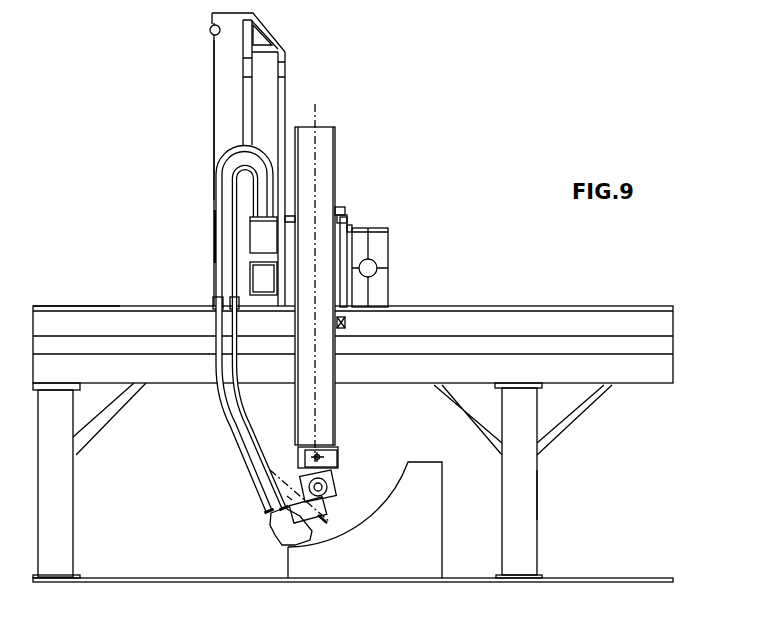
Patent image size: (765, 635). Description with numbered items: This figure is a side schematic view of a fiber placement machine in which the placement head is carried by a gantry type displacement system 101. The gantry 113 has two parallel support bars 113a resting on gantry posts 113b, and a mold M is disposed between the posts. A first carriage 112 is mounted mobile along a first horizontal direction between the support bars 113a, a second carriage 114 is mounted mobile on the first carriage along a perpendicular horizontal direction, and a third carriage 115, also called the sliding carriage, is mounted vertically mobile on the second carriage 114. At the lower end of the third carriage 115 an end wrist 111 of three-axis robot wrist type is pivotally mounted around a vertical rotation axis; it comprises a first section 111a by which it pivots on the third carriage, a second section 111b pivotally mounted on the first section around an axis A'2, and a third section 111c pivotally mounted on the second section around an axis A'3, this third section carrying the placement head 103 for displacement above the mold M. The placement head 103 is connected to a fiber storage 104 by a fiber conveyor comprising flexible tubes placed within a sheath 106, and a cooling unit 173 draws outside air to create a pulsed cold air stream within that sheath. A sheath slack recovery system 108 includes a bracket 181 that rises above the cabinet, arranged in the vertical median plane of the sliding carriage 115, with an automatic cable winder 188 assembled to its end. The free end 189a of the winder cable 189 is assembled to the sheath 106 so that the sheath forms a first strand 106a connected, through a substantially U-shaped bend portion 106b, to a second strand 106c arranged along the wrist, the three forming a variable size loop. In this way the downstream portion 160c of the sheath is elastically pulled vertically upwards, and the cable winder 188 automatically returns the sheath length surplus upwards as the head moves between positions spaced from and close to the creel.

The gantry type displacement system 101 is at (57, 298).
The placement head 103 is at (261, 533).
The fiber storage 104 is at (291, 202).
The sheath 106 is at (215, 403).
The first strand 106a is at (267, 181).
The U-shaped bend portion 106b is at (244, 150).
The second strand 106c is at (215, 283).
The sheath slack recovery system 108 is at (294, 60).
The end wrist 111 is at (340, 452).
The first wrist section 111a is at (338, 473).
The second wrist section 111b is at (332, 496).
The third wrist section 111c is at (285, 494).
The first carriage 112 is at (386, 251).
The gantry 113 is at (537, 521).
The support bars 113a is at (617, 312).
The gantry posts 113b is at (537, 489).
The second carriage 114 is at (349, 218).
The third carriage 115 is at (336, 127).
The downstream portion of the sheath 160c is at (258, 504).
The cooling unit 173 is at (260, 230).
The bracket 181 is at (275, 34).
The automatic cable winder 188 is at (209, 30).
The cable 189 is at (214, 62).
The free end of cable 189a is at (214, 240).
The axis A'2 is at (325, 496).
The axis A'3 is at (350, 272).
The mold M is at (427, 551).